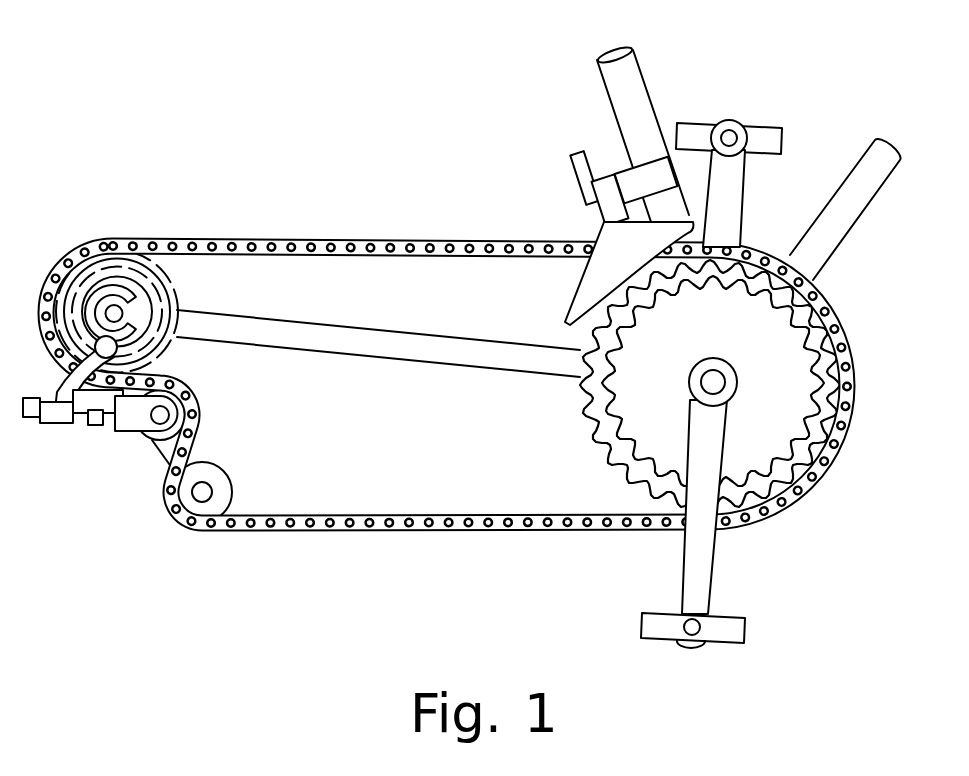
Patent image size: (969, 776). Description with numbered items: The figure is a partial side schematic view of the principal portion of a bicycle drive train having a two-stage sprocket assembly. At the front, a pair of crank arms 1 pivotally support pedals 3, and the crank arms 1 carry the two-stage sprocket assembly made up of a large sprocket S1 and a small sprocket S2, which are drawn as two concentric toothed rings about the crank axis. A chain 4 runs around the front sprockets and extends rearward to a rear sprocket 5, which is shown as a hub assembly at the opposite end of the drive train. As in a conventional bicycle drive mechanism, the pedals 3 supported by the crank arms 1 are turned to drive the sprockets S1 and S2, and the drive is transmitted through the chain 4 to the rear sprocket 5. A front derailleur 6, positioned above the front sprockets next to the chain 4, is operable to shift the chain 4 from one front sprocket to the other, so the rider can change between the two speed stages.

The crank arms 1 is at (728, 213).
The pedals 3 is at (764, 127).
The chain 4 is at (372, 240).
The rear sprocket 5 is at (186, 282).
The front derailleur 6 is at (588, 277).
The large sprocket S1 is at (580, 397).
The small sprocket S2 is at (613, 447).